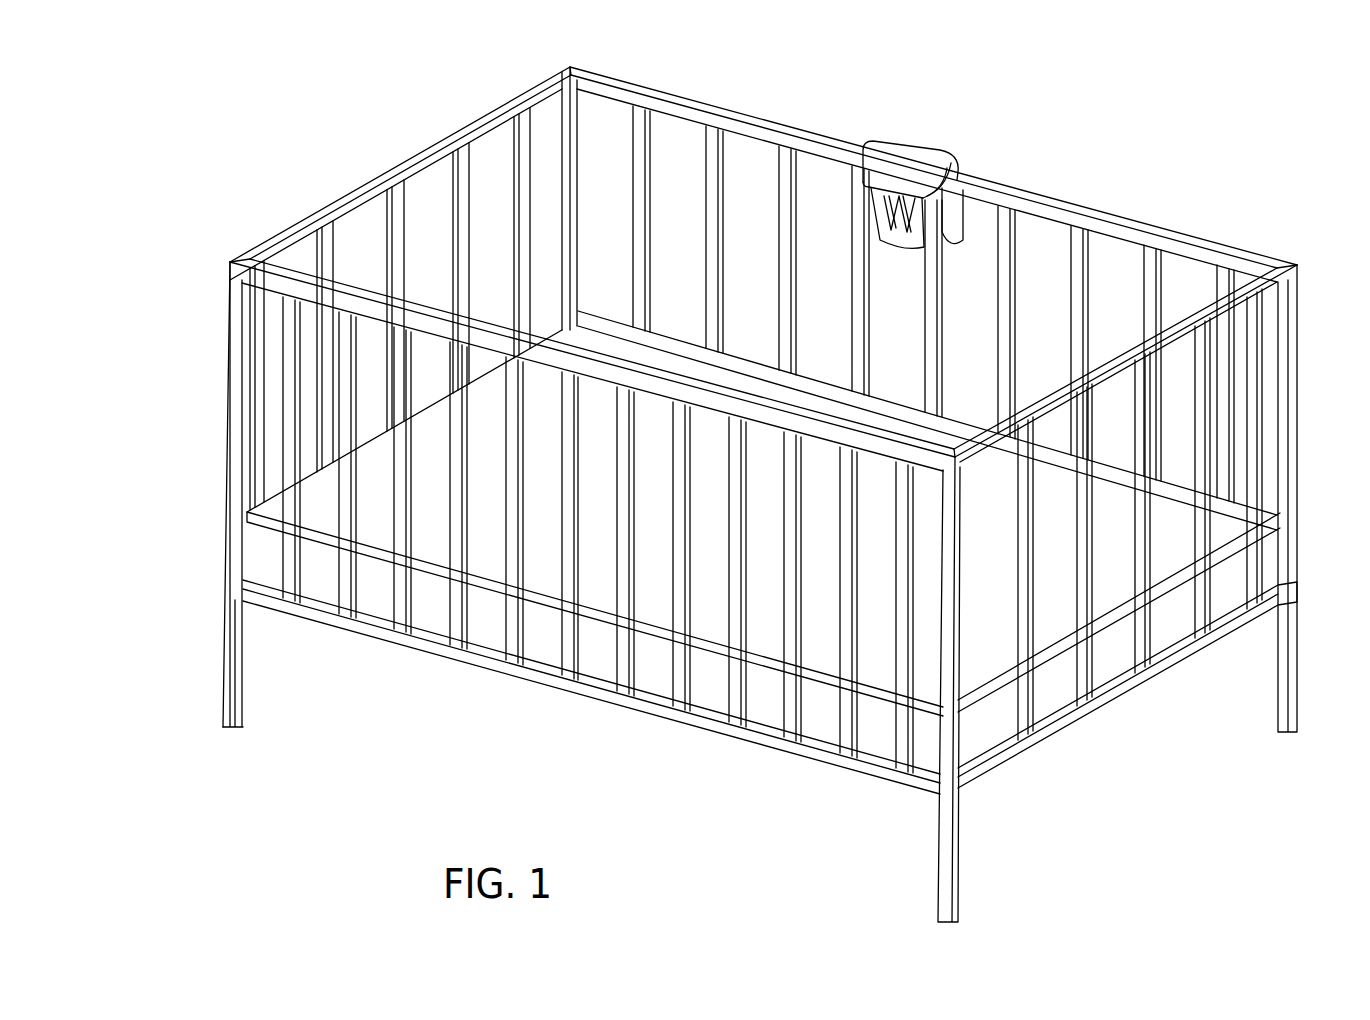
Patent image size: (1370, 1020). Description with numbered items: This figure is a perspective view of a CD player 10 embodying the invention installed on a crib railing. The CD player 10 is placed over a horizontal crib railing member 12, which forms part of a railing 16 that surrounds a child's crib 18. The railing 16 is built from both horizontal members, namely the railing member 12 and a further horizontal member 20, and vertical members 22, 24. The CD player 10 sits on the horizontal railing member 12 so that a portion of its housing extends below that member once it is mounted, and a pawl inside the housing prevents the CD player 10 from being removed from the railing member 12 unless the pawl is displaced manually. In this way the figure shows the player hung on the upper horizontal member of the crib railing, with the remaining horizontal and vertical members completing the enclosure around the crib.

The child's crib 18 is at (795, 106).
The CD player 10 is at (922, 150).
The crib railing member 12 is at (1095, 206).
The railing 16 is at (1297, 265).
The horizontal member 20 is at (400, 170).
The vertical member 22 is at (612, 680).
The vertical member 24 is at (1298, 428).